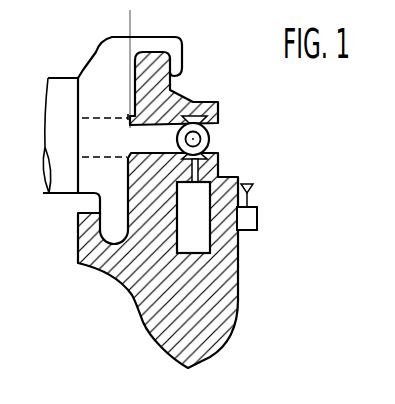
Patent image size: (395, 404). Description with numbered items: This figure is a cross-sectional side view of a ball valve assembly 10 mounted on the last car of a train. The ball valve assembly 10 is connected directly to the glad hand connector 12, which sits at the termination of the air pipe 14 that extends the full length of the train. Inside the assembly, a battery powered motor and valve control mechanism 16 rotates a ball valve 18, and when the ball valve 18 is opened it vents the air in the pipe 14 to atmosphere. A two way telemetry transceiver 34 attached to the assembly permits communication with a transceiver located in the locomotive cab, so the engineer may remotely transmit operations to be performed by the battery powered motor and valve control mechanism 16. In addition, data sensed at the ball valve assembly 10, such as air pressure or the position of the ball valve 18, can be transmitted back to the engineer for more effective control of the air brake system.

The ball valve assembly 10 is at (251, 259).
The glad hand connector 12 is at (119, 46).
The air pipe 14 is at (55, 91).
The battery powered motor and valve control mechanism 16 is at (200, 228).
The ball valve 18 is at (212, 143).
The two way telemetry transceiver 34 is at (257, 218).